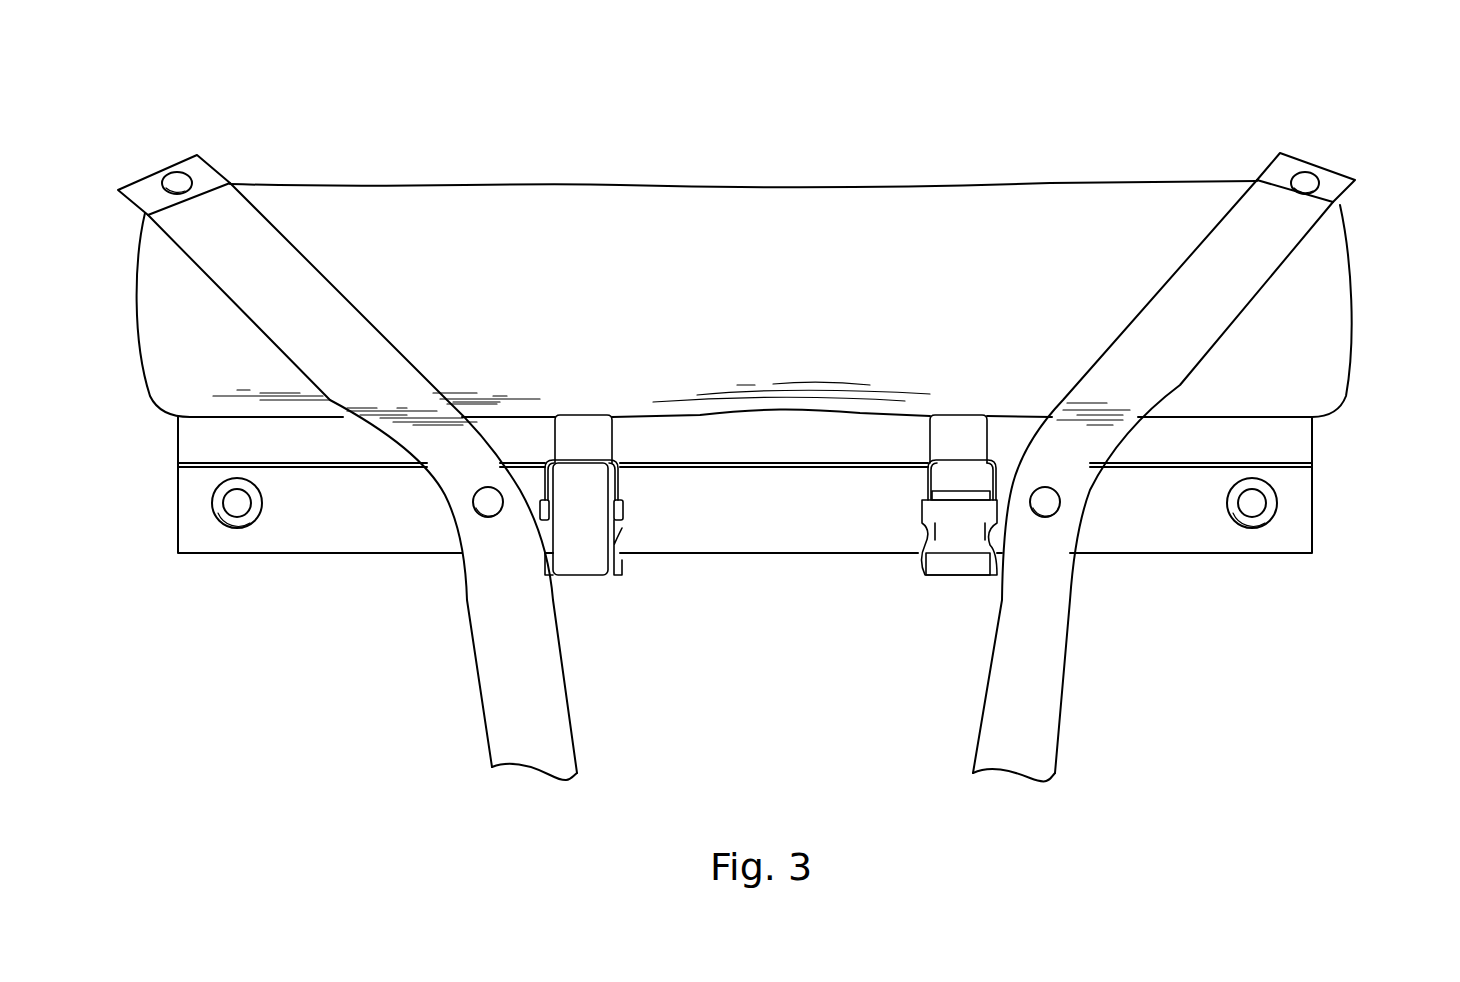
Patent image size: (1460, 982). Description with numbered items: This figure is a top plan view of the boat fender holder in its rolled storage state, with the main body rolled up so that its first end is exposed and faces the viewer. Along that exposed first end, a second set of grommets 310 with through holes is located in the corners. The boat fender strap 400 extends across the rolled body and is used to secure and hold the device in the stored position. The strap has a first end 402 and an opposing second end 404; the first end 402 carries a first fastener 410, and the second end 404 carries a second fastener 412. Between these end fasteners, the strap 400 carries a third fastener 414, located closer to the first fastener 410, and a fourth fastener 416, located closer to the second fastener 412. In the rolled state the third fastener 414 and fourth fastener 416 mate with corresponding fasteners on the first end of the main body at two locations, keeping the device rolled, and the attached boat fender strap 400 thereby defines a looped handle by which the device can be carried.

The second set of grommets 310 is at (233, 523).
The boat fender strap 400 is at (1167, 322).
The first end 402 is at (1345, 177).
The second end 404 is at (203, 157).
The first fastener 410 is at (1300, 178).
The second fastener 412 is at (175, 181).
The third fastener 414 is at (1044, 506).
The fourth fastener 416 is at (493, 505).